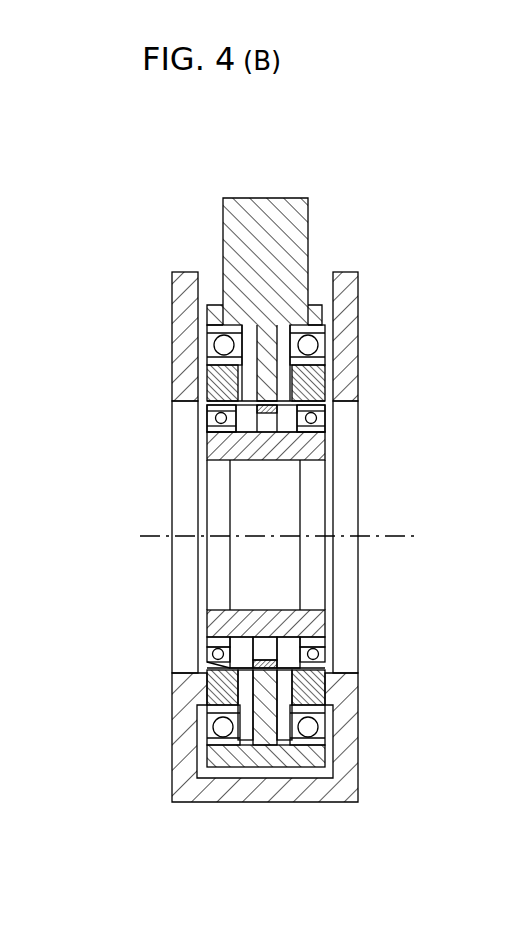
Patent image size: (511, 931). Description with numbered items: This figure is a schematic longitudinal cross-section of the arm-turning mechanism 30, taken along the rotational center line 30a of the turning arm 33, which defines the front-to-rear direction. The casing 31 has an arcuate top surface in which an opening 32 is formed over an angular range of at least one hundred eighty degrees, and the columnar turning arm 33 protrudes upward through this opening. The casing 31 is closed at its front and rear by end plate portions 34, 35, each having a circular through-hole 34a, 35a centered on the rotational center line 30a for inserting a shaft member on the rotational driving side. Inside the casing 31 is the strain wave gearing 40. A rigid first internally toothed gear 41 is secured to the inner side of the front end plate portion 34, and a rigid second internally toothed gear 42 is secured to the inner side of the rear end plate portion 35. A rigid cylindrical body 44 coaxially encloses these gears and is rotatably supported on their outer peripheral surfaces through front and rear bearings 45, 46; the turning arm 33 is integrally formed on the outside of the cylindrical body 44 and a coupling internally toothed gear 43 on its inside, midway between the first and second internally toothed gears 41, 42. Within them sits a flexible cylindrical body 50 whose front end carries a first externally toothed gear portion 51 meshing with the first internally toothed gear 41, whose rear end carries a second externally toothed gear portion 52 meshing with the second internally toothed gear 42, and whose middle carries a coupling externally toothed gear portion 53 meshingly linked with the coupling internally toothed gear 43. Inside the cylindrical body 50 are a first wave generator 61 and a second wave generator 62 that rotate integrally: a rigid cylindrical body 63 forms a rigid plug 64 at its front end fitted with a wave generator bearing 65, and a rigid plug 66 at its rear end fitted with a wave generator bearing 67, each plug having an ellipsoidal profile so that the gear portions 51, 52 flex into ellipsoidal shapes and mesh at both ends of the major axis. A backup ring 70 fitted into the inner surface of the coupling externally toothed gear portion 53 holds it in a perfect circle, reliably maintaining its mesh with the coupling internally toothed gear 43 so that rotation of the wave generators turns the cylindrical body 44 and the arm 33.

The arm-turning mechanism 30 is at (345, 195).
The rotational center line 30a is at (405, 537).
The casing 31 is at (372, 418).
The opening 32 is at (315, 300).
The turning arm 33 is at (225, 218).
The front end plate portion 34 is at (362, 380).
The through-hole 34a is at (343, 665).
The rear end plate portion 35 is at (175, 307).
The through-hole 35a is at (180, 665).
The strain wave gearing 40 is at (151, 344).
The first internally toothed gear 41 is at (325, 387).
The second internally toothed gear 42 is at (215, 383).
The coupling internally toothed gear 43 is at (265, 395).
The cylindrical body 44 is at (366, 313).
The front bearing 45 is at (323, 335).
The rear bearing 46 is at (207, 348).
The cylindrical body 50 is at (285, 413).
The first externally toothed gear portion 51 is at (323, 415).
The second externally toothed gear portion 52 is at (205, 407).
The coupling externally toothed gear portion 53 is at (253, 412).
The first wave generator 61 is at (379, 549).
The second wave generator 62 is at (153, 546).
The rigid cylindrical body 63 is at (255, 610).
The rigid plug 64 is at (312, 635).
The wave generator bearing 65 is at (322, 652).
The rigid plug 66 is at (215, 632).
The wave generator bearing 67 is at (210, 653).
The backup ring 70 is at (262, 417).